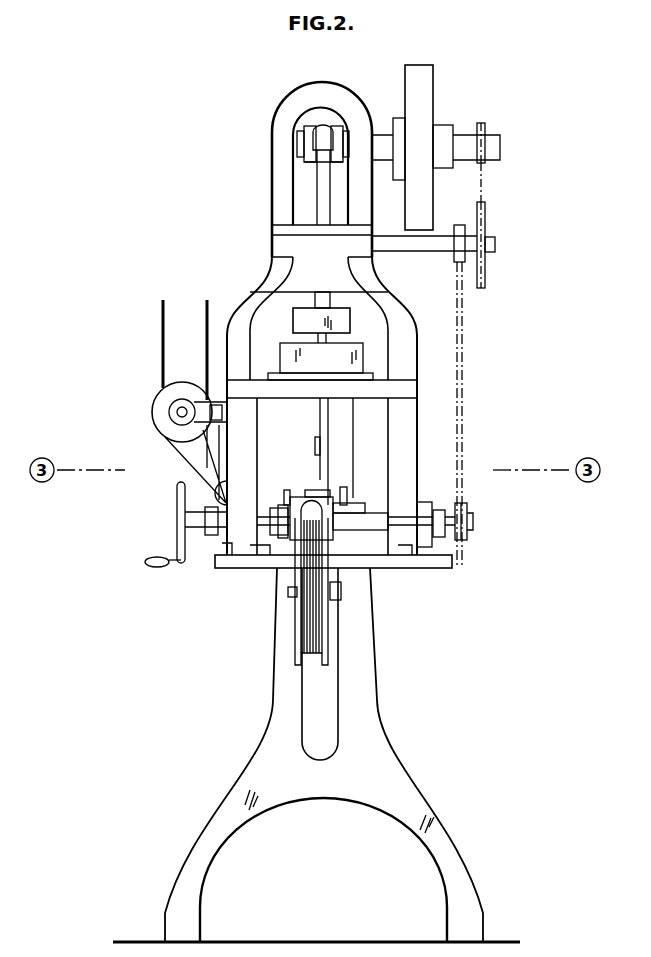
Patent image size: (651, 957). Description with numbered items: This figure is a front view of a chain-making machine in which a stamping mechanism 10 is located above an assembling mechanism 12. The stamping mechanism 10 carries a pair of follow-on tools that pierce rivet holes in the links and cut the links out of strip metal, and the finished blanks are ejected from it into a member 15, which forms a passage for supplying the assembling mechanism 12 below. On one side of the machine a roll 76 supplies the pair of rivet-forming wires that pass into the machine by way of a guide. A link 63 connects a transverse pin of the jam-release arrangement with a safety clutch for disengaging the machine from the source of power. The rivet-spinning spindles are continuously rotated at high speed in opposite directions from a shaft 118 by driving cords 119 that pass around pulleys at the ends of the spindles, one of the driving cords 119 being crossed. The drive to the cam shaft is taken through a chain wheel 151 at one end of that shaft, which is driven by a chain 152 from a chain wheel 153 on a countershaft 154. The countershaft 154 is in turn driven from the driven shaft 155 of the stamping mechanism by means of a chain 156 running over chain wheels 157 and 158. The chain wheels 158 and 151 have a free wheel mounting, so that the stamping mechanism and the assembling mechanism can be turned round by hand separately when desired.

The stamping mechanism 10 is at (323, 340).
The assembling mechanism 12 is at (320, 502).
The member 15 is at (320, 424).
The link 63 is at (353, 443).
The roll 76 is at (300, 600).
The shaft 118 is at (176, 412).
The driving cords 119 is at (205, 466).
The chain wheel 151 is at (468, 542).
The chain 152 is at (463, 340).
The chain wheel 153 is at (457, 254).
The countershaft 154 is at (497, 243).
The driven shaft 155 is at (501, 147).
The chain 156 is at (484, 188).
The chain wheel 157 is at (487, 268).
The chain wheel 158 is at (481, 128).